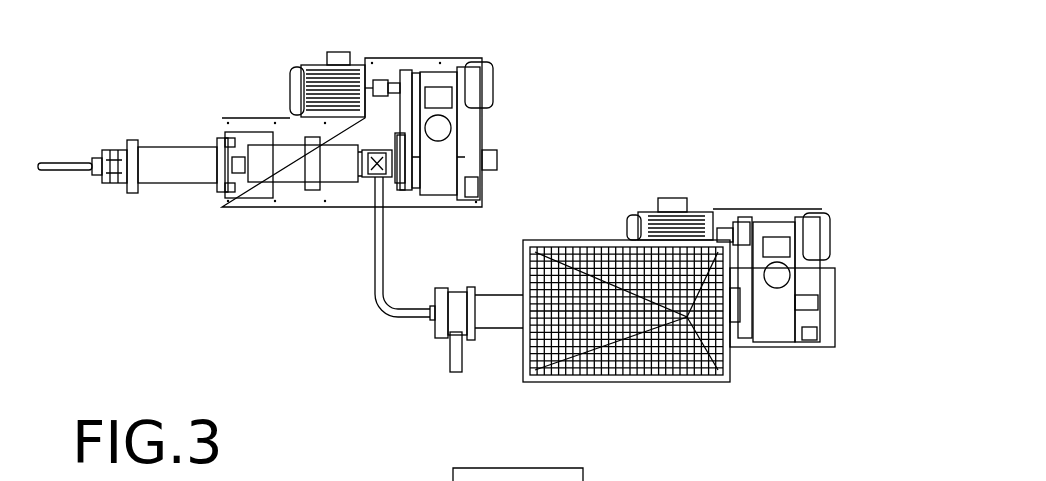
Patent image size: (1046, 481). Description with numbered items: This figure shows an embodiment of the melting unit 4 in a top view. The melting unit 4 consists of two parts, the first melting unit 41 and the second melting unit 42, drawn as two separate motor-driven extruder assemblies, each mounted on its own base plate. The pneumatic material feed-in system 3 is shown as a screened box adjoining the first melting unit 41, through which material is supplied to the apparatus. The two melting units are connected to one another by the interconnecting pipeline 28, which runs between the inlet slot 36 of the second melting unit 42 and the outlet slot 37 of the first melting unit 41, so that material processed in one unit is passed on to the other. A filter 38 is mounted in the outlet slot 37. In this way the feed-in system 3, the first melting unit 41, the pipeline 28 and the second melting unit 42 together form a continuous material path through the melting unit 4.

The pneumatic material feed-in system 3 is at (668, 385).
The melting unit 4 is at (525, 203).
The interconnecting pipeline 28 is at (378, 250).
The inlet slot 36 is at (367, 175).
The outlet slot 37 is at (92, 157).
The filter 38 is at (455, 352).
The first melting unit 41 is at (773, 352).
The second melting unit 42 is at (252, 227).